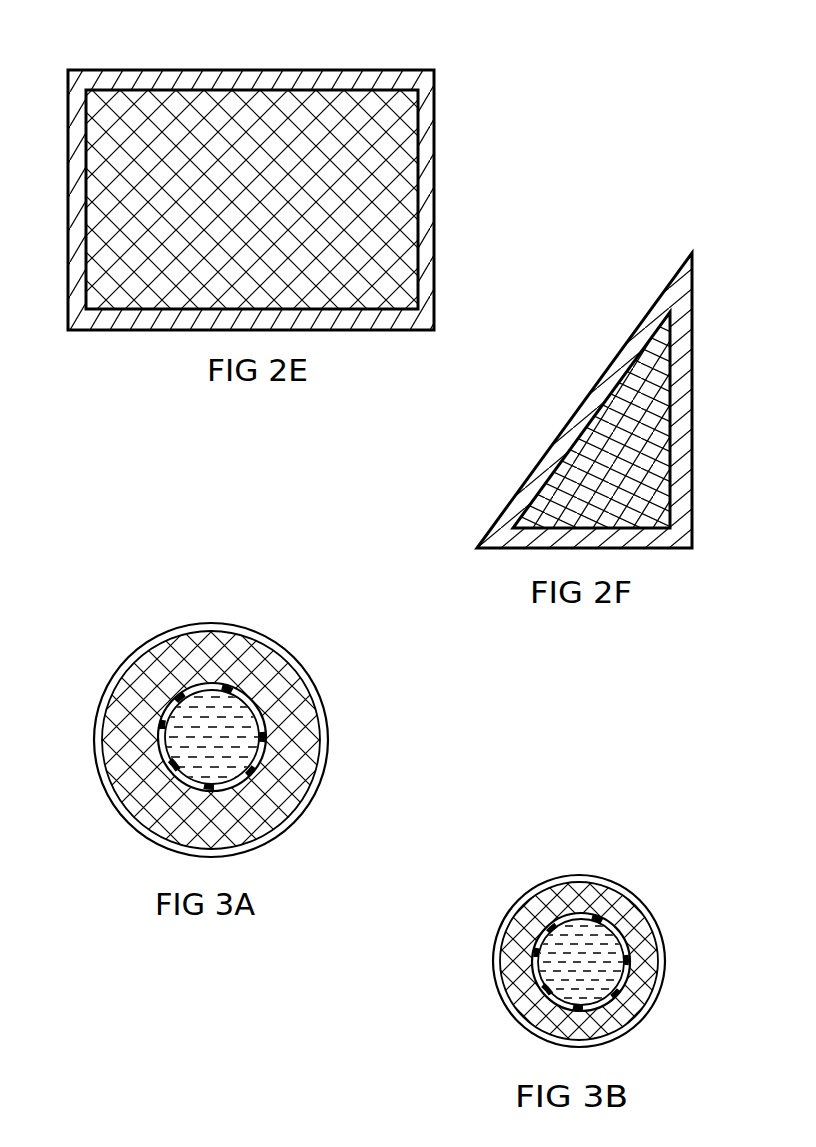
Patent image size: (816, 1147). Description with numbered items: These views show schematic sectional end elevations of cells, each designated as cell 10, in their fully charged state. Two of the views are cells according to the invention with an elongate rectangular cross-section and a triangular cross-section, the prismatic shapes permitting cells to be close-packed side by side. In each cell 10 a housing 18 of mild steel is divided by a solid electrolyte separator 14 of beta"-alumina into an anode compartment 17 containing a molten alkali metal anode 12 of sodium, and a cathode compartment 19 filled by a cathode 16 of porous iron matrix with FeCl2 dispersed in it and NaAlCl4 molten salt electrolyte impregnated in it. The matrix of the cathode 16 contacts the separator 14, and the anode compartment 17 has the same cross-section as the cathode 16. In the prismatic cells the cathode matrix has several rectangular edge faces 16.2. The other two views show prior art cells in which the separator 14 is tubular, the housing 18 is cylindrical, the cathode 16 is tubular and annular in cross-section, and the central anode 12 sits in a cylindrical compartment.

In FIG. 2E, the cell 10 is at (261, 165).
In FIG. 2F, the cell 10 is at (590, 370).
In FIG. 3A, the cell 10 is at (217, 710).
In FIG. 3B, the cell 10 is at (576, 930).
In FIG. 3A, the molten alkali metal anode 12 is at (213, 762).
In FIG. 3B, the molten alkali metal anode 12 is at (568, 980).
In FIG. 3A, the solid electrolyte separator 14 is at (263, 715).
In FIG. 3B, the solid electrolyte separator 14 is at (603, 925).
In FIG. 2E, the cathode 16 is at (383, 173).
In FIG. 2F, the cathode 16 is at (642, 425).
In FIG. 3A, the cathode 16 is at (295, 735).
In FIG. 3B, the cathode 16 is at (657, 940).
In FIG. 2E, the edge face of cathode matrix 16.2 is at (122, 80).
In FIG. 2F, the edge face of cathode matrix 16.2 is at (523, 495).
In FIG. 3A, the anode compartment 17 is at (186, 745).
In FIG. 3B, the anode compartment 17 is at (571, 940).
In FIG. 2E, the housing 18 is at (423, 215).
In FIG. 2F, the housing 18 is at (683, 352).
In FIG. 3A, the housing 18 is at (322, 760).
In FIG. 3B, the housing 18 is at (662, 972).
In FIG. 2E, the cathode compartment 19 is at (373, 268).
In FIG. 2F, the cathode compartment 19 is at (638, 480).
In FIG. 3A, the cathode compartment 19 is at (273, 785).
In FIG. 3B, the cathode compartment 19 is at (505, 961).